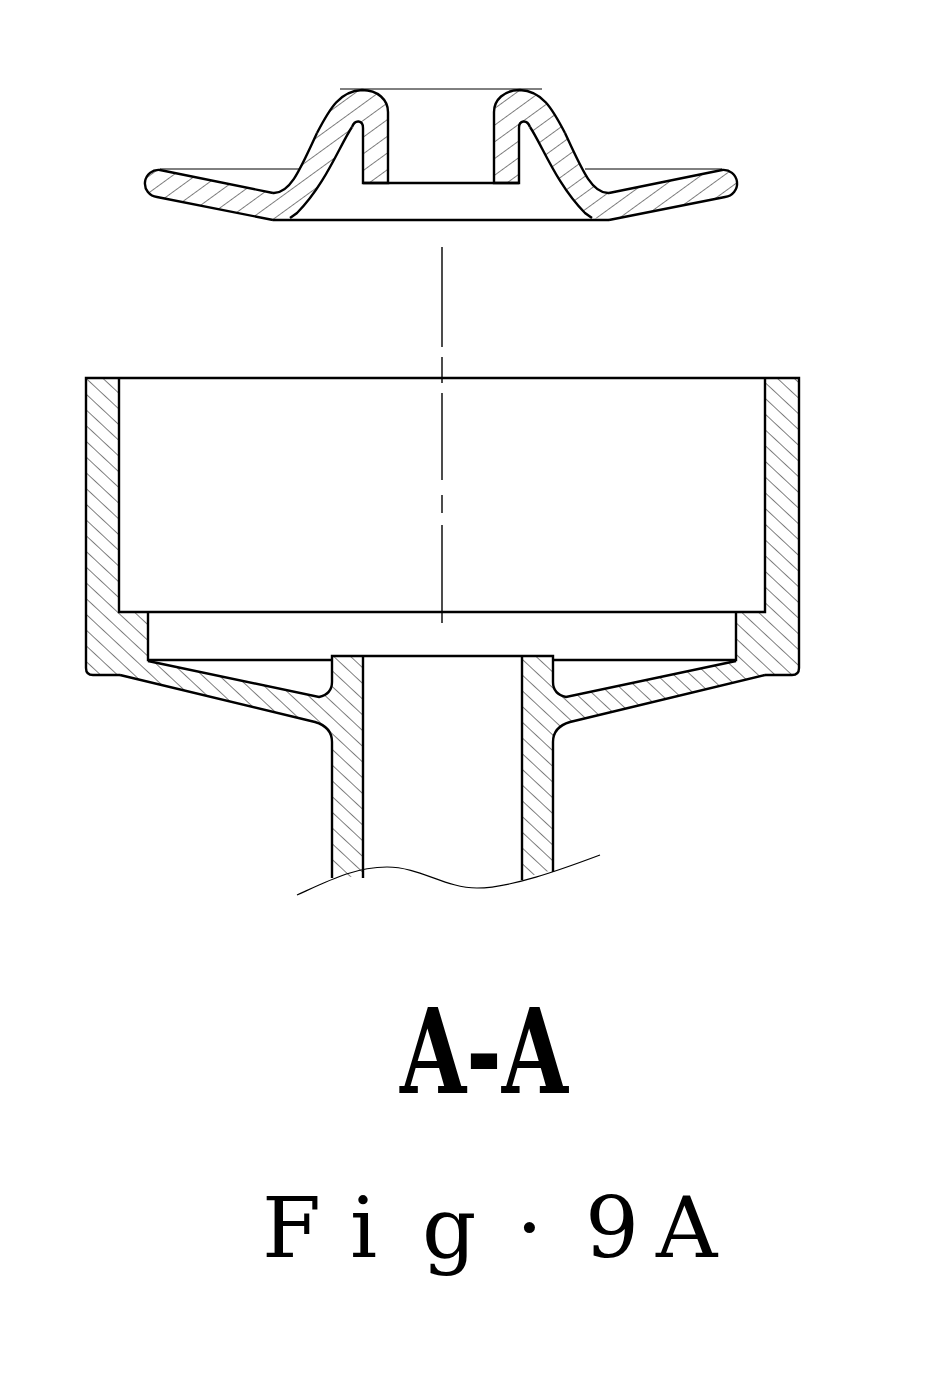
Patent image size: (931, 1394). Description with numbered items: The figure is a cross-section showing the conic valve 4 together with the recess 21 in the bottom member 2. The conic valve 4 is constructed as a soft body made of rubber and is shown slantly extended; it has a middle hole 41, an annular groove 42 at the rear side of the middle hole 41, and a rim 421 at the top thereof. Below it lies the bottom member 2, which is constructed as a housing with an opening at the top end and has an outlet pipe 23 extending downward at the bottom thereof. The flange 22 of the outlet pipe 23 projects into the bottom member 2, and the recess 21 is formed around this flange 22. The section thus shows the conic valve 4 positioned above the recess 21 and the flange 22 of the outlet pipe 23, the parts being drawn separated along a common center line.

The conic valve 4 is at (441, 117).
The middle hole 41 is at (430, 135).
The rim 421 is at (520, 110).
The annular groove 42 is at (533, 165).
The bottom member 2 is at (442, 613).
The recess 21 is at (590, 668).
The flange 22 is at (533, 673).
The outlet pipe 23 is at (385, 771).